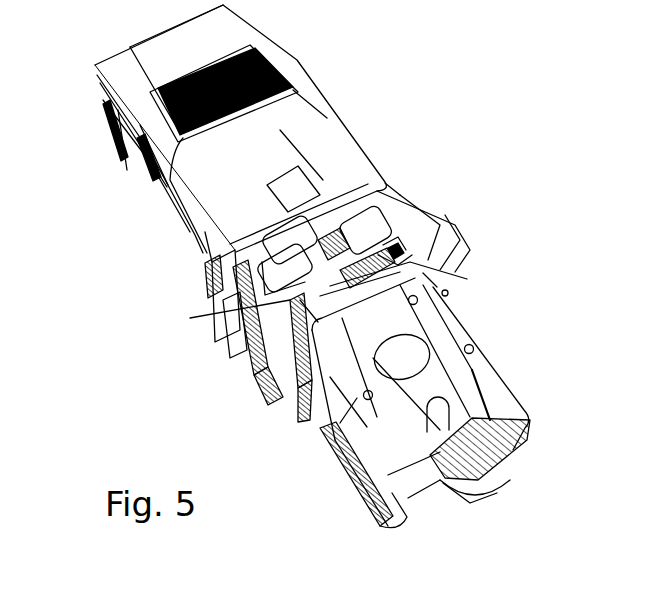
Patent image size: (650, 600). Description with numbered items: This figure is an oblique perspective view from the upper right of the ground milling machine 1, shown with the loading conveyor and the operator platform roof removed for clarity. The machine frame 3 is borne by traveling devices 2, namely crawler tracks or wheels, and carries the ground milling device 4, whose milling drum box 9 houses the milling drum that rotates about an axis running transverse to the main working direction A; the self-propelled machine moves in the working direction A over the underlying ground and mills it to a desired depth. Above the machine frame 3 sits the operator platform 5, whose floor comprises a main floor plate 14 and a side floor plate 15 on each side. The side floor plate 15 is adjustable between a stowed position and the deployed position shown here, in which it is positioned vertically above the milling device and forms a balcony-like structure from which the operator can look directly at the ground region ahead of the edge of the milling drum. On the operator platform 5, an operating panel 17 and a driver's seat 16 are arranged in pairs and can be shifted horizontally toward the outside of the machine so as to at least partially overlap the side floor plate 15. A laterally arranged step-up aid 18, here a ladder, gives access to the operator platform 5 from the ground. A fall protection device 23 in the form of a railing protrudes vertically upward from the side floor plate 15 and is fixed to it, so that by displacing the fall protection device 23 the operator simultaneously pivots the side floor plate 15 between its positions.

The ground milling machine 1 is at (395, 108).
The traveling devices 2 is at (373, 517).
The machine frame 3 is at (195, 245).
The ground milling device 4 is at (265, 410).
The operator platform 5 is at (393, 243).
The milling drum box 9 is at (233, 340).
The main floor plate 14 is at (450, 306).
The side floor plate 15 is at (467, 279).
The driver's seat 16 is at (210, 273).
The operating panel 17 is at (433, 223).
The step-up aid 18 is at (240, 368).
The fall protection device 23 is at (467, 246).